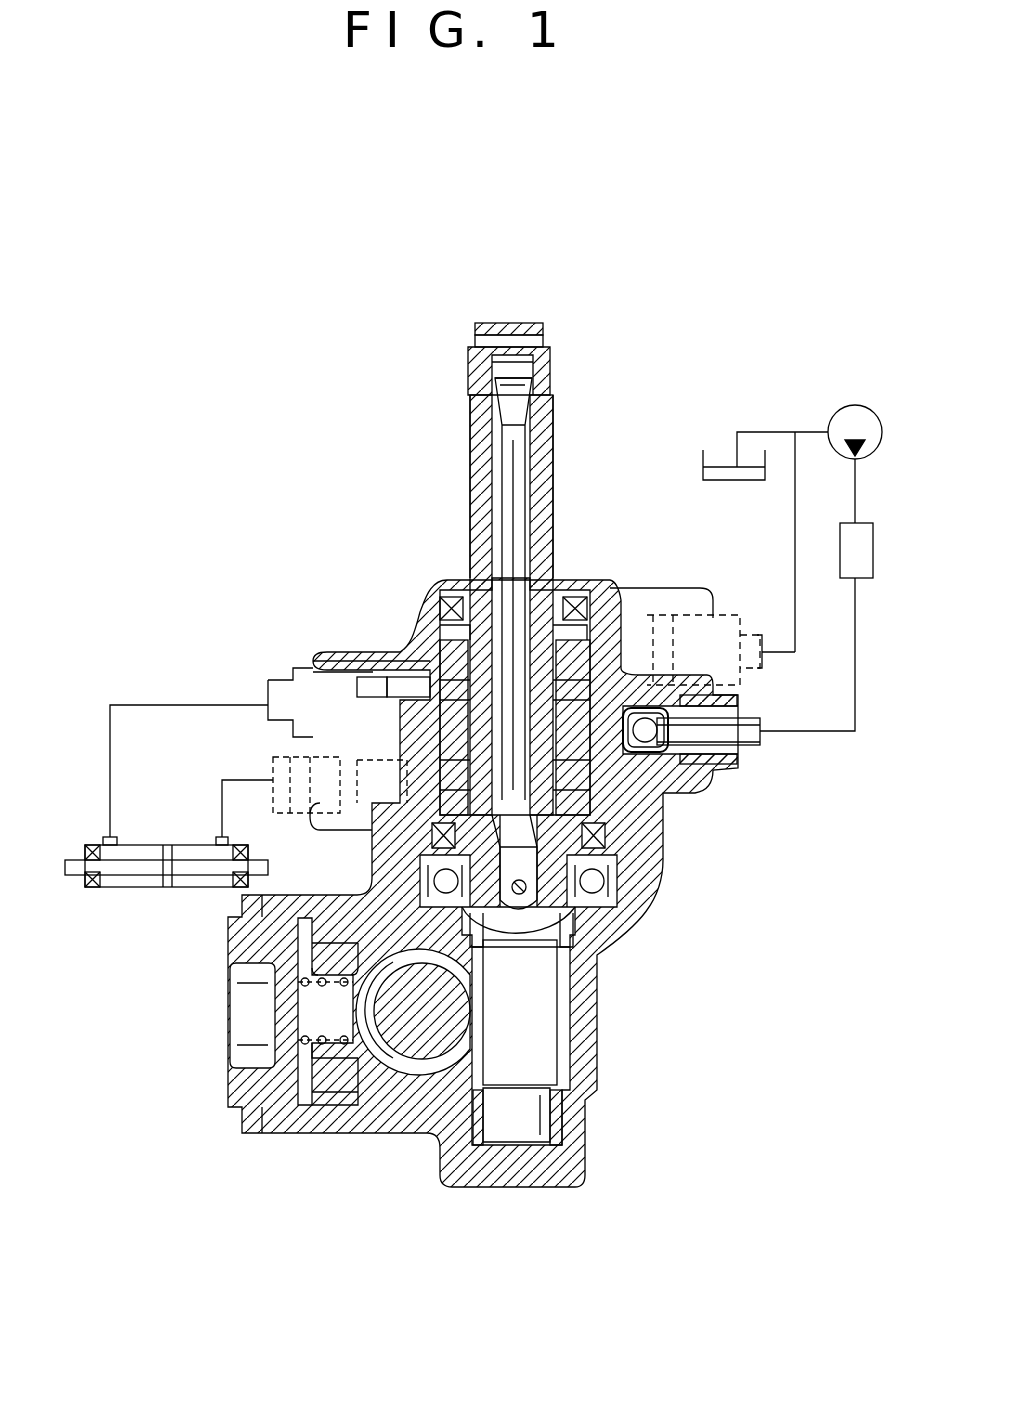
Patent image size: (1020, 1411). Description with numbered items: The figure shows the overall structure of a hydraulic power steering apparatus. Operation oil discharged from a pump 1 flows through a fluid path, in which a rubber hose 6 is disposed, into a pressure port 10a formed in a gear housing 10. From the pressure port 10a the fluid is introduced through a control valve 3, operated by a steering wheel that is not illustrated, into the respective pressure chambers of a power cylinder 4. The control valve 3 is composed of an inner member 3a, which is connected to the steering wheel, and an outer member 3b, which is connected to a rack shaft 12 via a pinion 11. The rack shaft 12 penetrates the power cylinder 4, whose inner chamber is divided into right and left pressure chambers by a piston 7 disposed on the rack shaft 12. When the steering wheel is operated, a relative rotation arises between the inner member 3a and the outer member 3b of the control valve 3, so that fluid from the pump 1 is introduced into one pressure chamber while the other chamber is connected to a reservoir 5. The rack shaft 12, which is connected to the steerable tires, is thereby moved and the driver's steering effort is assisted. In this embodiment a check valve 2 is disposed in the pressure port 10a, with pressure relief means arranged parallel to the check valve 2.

The pump 1 is at (845, 407).
The check valve 2 is at (665, 770).
The control valve 3 is at (410, 650).
The inner member 3a is at (467, 578).
The outer member 3b is at (395, 660).
The power cylinder 4 is at (96, 905).
The reservoir 5 is at (703, 462).
The rubber hose 6 is at (862, 568).
The piston 7 is at (168, 887).
The gear housing 10 is at (588, 1198).
The pressure port 10a is at (725, 785).
The pinion 11 is at (565, 1038).
The rack shaft 12 is at (420, 1042).